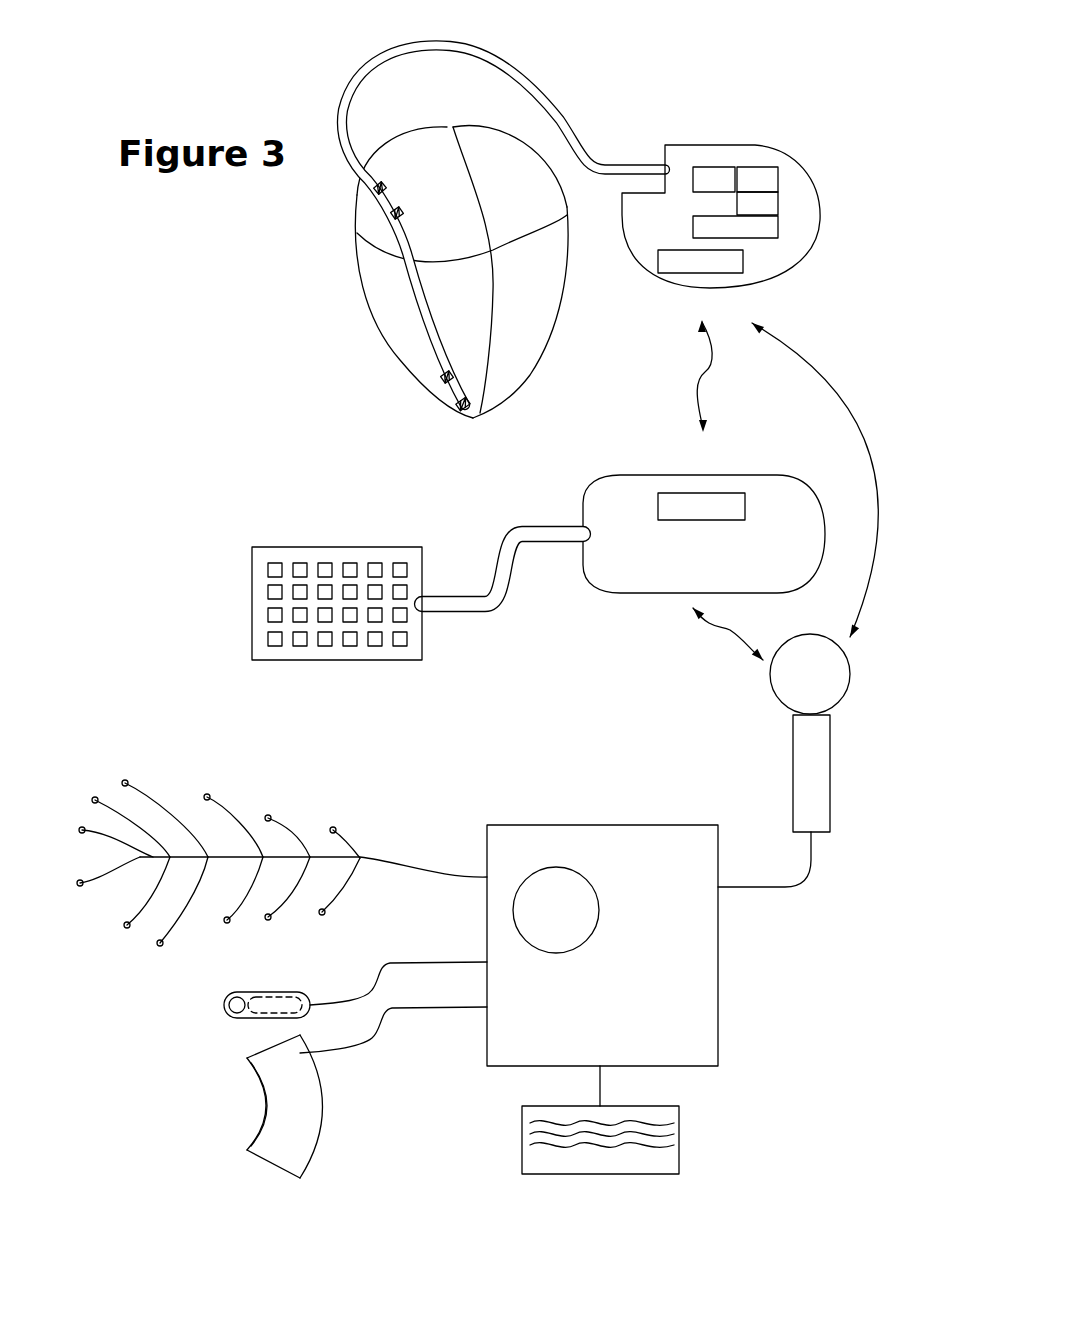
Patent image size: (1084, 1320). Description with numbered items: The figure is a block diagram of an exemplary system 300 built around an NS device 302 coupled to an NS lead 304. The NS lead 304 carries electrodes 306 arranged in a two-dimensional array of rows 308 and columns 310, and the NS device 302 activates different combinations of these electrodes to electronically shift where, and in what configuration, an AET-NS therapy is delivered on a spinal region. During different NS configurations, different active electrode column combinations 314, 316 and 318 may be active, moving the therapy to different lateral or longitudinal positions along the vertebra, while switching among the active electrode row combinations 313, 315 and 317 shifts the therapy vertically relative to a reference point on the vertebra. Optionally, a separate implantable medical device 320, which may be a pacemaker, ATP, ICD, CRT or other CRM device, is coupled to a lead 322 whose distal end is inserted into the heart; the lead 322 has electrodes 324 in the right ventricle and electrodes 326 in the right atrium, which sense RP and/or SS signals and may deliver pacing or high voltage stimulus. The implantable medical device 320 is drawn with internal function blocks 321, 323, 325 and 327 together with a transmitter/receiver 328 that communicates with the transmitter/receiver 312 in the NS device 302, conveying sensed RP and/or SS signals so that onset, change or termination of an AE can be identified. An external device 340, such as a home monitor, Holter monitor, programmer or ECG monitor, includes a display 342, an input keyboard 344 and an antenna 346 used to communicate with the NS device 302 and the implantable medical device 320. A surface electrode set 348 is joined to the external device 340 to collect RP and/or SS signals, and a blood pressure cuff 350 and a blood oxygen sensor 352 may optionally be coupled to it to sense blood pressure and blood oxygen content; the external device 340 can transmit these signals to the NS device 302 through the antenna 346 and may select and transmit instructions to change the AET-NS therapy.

The system 300 is at (197, 312).
The NS device 302 is at (704, 511).
The NS lead 304 is at (330, 606).
The electrodes 306 is at (408, 638).
The rows 308 is at (258, 565).
The columns 310 is at (330, 594).
The transmitter/receiver (Tx/Rx) 312 is at (667, 493).
The active electrode row combination 313 is at (330, 631).
The active electrode column combination 314 is at (305, 668).
The active electrode row combination 315 is at (227, 585).
The active electrode column combination 316 is at (357, 687).
The active electrode row combination 317 is at (243, 597).
The active electrode column combination 318 is at (405, 668).
The implantable medical device (IMD) 320 is at (740, 203).
The arrhythmia detection module 321 is at (715, 168).
The lead 322 is at (340, 87).
The monitoring module 323 is at (778, 182).
The electrodes 324 is at (443, 372).
The alert module 325 is at (778, 205).
The electrodes 326 is at (390, 217).
The anti-tachycardia pacing module 327 is at (778, 227).
The transmitter/receiver (Tx/Rx) 328 is at (743, 262).
The external device 340 is at (602, 915).
The display 342 is at (603, 909).
The input keyboard 344 is at (680, 1130).
The antenna 346 is at (815, 772).
The surface electrode set 348 is at (377, 863).
The blood pressure cuff 350 is at (335, 1107).
The blood oxygen sensor 352 is at (263, 990).